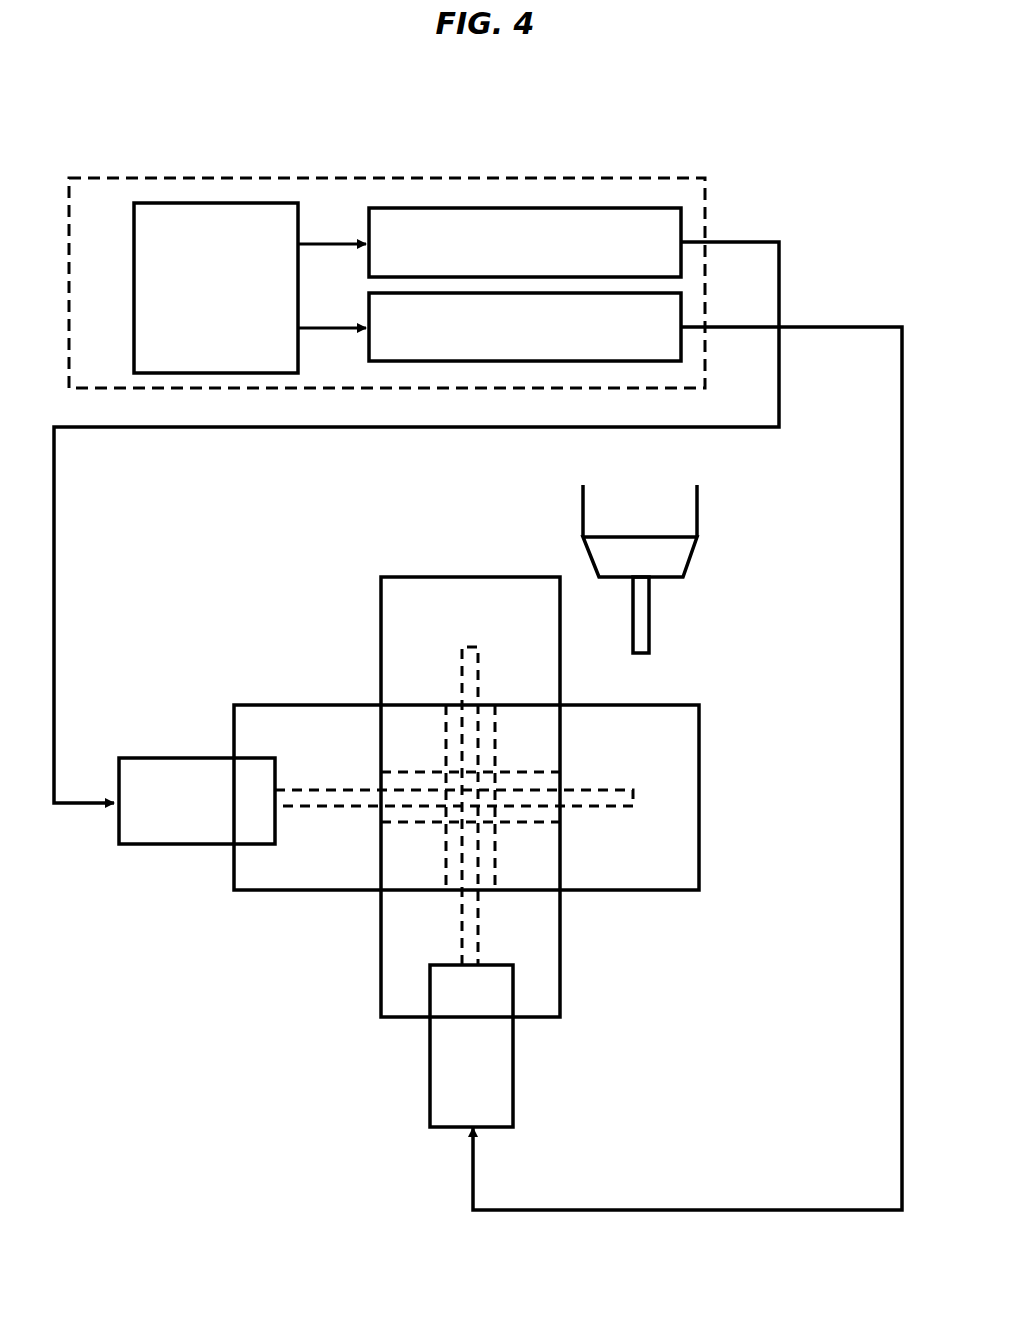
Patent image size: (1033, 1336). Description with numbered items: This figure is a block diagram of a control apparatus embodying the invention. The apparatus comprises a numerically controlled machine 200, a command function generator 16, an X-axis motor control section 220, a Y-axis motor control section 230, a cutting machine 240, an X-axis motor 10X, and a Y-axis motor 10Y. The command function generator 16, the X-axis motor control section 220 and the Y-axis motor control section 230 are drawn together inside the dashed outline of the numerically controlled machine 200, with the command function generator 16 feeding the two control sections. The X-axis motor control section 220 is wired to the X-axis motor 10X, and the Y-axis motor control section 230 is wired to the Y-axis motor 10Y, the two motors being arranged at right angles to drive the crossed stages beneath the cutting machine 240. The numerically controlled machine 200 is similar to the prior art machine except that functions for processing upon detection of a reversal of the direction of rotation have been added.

The numerically controlled machine 200 is at (462, 178).
The command function generator 16 is at (216, 288).
The X-axis motor control section 220 is at (525, 242).
The Y-axis motor control section 230 is at (525, 327).
The X-axis motor 10X is at (189, 758).
The Y-axis motor 10Y is at (513, 1062).
The cutting machine 240 is at (693, 555).